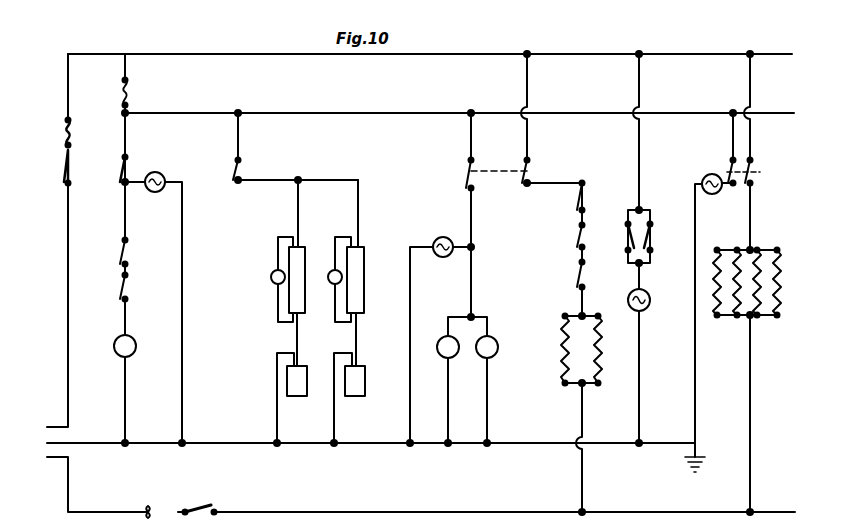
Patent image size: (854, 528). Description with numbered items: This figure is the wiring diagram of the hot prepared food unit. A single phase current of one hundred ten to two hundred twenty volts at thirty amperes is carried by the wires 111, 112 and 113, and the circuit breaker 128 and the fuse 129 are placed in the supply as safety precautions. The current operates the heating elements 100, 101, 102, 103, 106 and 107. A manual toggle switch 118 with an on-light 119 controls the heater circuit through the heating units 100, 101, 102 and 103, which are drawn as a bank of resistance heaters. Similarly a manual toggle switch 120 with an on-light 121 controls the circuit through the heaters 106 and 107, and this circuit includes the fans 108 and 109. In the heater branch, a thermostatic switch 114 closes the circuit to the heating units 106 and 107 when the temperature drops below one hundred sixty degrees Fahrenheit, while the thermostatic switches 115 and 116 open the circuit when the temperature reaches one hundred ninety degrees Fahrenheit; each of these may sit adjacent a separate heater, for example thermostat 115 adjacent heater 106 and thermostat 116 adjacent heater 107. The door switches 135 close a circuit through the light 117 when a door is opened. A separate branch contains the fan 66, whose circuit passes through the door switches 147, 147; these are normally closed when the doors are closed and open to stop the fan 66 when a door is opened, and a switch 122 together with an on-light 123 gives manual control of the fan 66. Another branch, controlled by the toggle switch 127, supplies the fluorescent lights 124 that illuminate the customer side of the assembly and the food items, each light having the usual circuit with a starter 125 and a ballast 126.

The fan 66 is at (133, 339).
The heating element 100 is at (778, 310).
The heating element 101 is at (760, 318).
The heating element 102 is at (739, 318).
The heating element 103 is at (717, 314).
The heating unit 106 is at (600, 345).
The heating unit 107 is at (562, 348).
The fan 108 is at (440, 356).
The fan 109 is at (490, 357).
The wire 111 is at (68, 392).
The wire 112 is at (74, 442).
The wire 113 is at (65, 482).
The thermostatic switch 114 is at (587, 186).
The thermostatic switch 115 is at (571, 235).
The thermostatic switch 116 is at (570, 274).
The light 117 is at (649, 300).
The manual toggle switch 118 is at (756, 168).
The on-light 119 is at (708, 174).
The manual toggle switch 120 is at (532, 164).
The on-light 121 is at (438, 236).
The switch 122 is at (128, 164).
The on-light 123 is at (164, 172).
The fluorescent light 124 is at (290, 295).
The starter 125 is at (271, 272).
The ballast 126 is at (307, 388).
The toggle switch 127 is at (242, 166).
The circuit breaker 128 is at (70, 149).
The fuse 129 is at (126, 88).
The door switch 135 is at (626, 238).
The door switch 147 is at (130, 254).